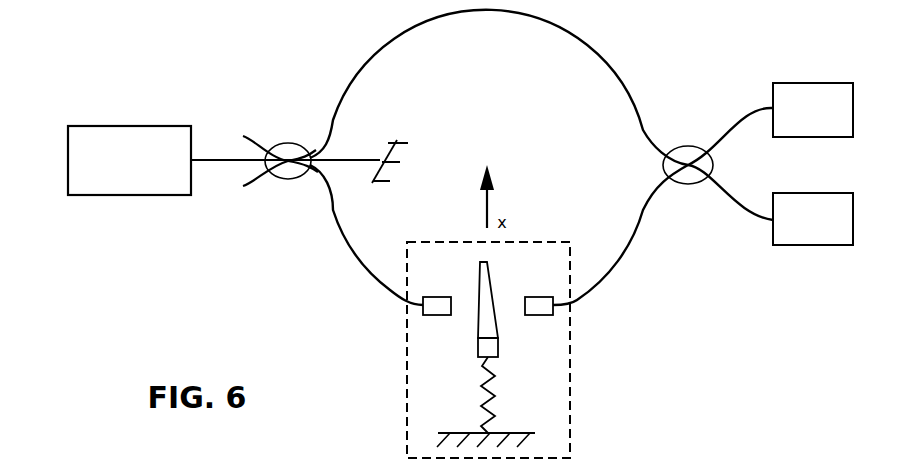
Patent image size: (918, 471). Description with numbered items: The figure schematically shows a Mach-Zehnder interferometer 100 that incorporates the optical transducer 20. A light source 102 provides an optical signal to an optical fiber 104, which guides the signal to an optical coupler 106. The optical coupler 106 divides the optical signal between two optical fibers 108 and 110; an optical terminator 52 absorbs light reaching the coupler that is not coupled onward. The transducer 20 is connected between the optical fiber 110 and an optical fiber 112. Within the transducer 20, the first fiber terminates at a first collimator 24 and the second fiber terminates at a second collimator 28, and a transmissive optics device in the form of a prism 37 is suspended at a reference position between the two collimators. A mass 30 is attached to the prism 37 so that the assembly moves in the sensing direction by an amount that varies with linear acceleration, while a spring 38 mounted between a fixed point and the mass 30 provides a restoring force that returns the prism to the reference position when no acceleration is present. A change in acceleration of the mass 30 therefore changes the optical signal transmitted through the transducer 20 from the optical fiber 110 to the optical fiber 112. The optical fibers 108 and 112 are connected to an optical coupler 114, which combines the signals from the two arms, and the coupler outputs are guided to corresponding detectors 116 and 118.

The Mach-Zehnder interferometer 100 is at (138, 308).
The light source 102 is at (126, 126).
The optical fiber 104 is at (210, 159).
The optical coupler 106 is at (283, 143).
The optical fiber 108 is at (375, 55).
The optical fiber 110 is at (360, 266).
The optical fiber 112 is at (628, 248).
The optical coupler 114 is at (690, 146).
The detector 116 is at (808, 82).
The detector 118 is at (797, 246).
The optical terminator 52 is at (432, 155).
The optical transducer 20 is at (405, 333).
The first collimator 24 is at (432, 297).
The second collimator 28 is at (535, 316).
The prism 37 is at (495, 288).
The mass 30 is at (472, 345).
The spring 38 is at (495, 402).